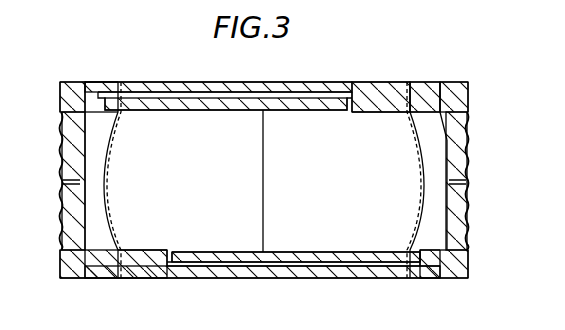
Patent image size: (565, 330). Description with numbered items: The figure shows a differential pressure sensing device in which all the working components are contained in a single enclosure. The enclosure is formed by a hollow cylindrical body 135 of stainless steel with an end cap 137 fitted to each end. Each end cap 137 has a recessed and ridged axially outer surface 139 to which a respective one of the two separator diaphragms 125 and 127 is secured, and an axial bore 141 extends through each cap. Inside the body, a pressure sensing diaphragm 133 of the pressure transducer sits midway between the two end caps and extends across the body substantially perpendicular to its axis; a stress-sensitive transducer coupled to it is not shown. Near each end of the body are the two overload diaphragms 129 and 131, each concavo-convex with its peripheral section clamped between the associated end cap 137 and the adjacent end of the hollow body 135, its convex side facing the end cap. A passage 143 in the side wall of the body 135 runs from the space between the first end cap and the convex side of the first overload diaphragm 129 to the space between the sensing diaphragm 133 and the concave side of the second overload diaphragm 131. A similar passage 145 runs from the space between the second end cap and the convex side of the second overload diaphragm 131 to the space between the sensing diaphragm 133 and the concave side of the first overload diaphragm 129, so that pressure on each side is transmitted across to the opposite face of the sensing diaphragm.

The separator diaphragm 125 is at (62, 214).
The separator diaphragm 127 is at (470, 204).
The overload diaphragm 129 is at (112, 190).
The overload diaphragm 131 is at (422, 160).
The pressure sensing diaphragm 133 is at (264, 190).
The hollow cylindrical body 135 is at (360, 82).
The end cap 137 is at (78, 90).
The axially outer surface 139 is at (62, 152).
The axial bore 141 is at (61, 186).
The passage 143 is at (166, 96).
The passage 145 is at (316, 278).